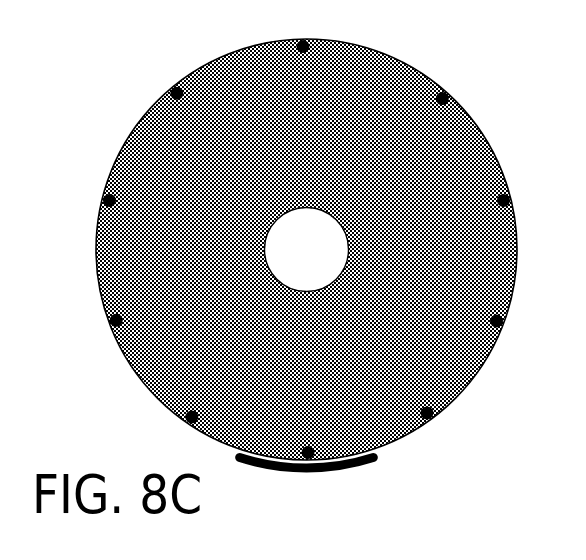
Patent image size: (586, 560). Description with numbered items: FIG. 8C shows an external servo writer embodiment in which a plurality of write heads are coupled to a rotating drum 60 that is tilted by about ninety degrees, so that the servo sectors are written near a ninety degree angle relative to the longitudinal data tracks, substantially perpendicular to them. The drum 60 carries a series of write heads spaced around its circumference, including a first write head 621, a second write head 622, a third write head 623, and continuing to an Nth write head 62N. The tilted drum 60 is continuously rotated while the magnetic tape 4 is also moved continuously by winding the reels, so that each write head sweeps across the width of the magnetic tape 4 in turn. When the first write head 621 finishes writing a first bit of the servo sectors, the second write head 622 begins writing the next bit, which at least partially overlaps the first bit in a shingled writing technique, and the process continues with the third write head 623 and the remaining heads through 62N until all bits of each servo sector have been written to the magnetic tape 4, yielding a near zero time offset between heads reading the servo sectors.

The drum 60 is at (421, 56).
The first write head 621 is at (308, 447).
The second write head 622 is at (195, 411).
The third write head 623 is at (121, 317).
The Nth write head 62N is at (426, 408).
The magnetic tape 4 is at (340, 486).